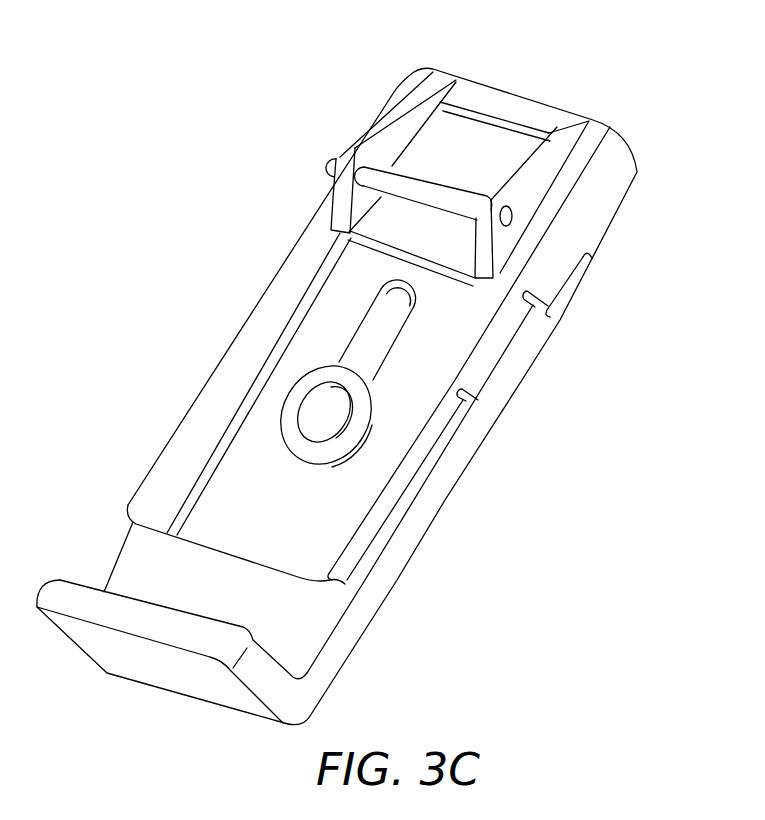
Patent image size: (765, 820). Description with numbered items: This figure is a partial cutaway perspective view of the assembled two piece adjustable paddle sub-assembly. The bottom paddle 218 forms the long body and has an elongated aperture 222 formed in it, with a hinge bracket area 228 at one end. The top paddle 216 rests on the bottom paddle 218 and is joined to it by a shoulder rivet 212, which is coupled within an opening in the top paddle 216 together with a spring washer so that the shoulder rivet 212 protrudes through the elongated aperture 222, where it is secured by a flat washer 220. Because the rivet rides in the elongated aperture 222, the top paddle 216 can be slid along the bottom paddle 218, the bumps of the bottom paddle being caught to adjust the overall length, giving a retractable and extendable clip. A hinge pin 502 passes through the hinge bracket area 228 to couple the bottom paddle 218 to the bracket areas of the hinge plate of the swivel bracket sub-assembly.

The shoulder rivet 212 is at (322, 413).
The top paddle 216 is at (117, 563).
The bottom paddle 218 is at (206, 383).
The flat washer 220 is at (363, 428).
The elongated aperture 222 is at (404, 341).
The hinge bracket area 228 is at (533, 183).
The hinge pin 502 is at (380, 170).